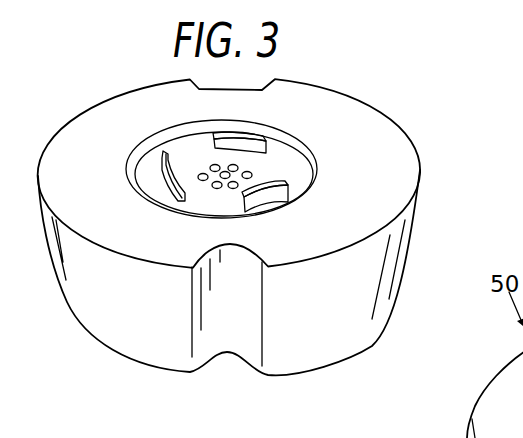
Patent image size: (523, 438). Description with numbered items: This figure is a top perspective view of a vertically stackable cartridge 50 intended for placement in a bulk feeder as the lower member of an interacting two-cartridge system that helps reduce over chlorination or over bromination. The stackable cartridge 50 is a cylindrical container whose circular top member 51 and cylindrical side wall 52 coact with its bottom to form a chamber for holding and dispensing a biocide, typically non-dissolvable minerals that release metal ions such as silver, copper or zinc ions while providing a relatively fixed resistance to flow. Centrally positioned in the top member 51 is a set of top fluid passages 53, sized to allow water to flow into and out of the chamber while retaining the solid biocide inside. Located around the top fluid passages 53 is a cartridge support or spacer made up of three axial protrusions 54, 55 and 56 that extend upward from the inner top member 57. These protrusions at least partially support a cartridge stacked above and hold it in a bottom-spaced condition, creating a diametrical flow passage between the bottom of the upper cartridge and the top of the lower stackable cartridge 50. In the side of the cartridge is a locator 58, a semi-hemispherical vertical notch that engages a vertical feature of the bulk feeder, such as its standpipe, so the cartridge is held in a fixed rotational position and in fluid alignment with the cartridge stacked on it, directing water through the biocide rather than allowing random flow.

The stackable cartridge 50 is at (392, 101).
The top member 51 is at (392, 157).
The cylindrical side wall 52 is at (392, 248).
The top fluid passages 53 is at (234, 166).
The axial protrusion 54 is at (162, 172).
The axial protrusion 55 is at (272, 202).
The axial protrusion 56 is at (230, 134).
The inner top member 57 is at (289, 155).
The locator 58 is at (227, 351).